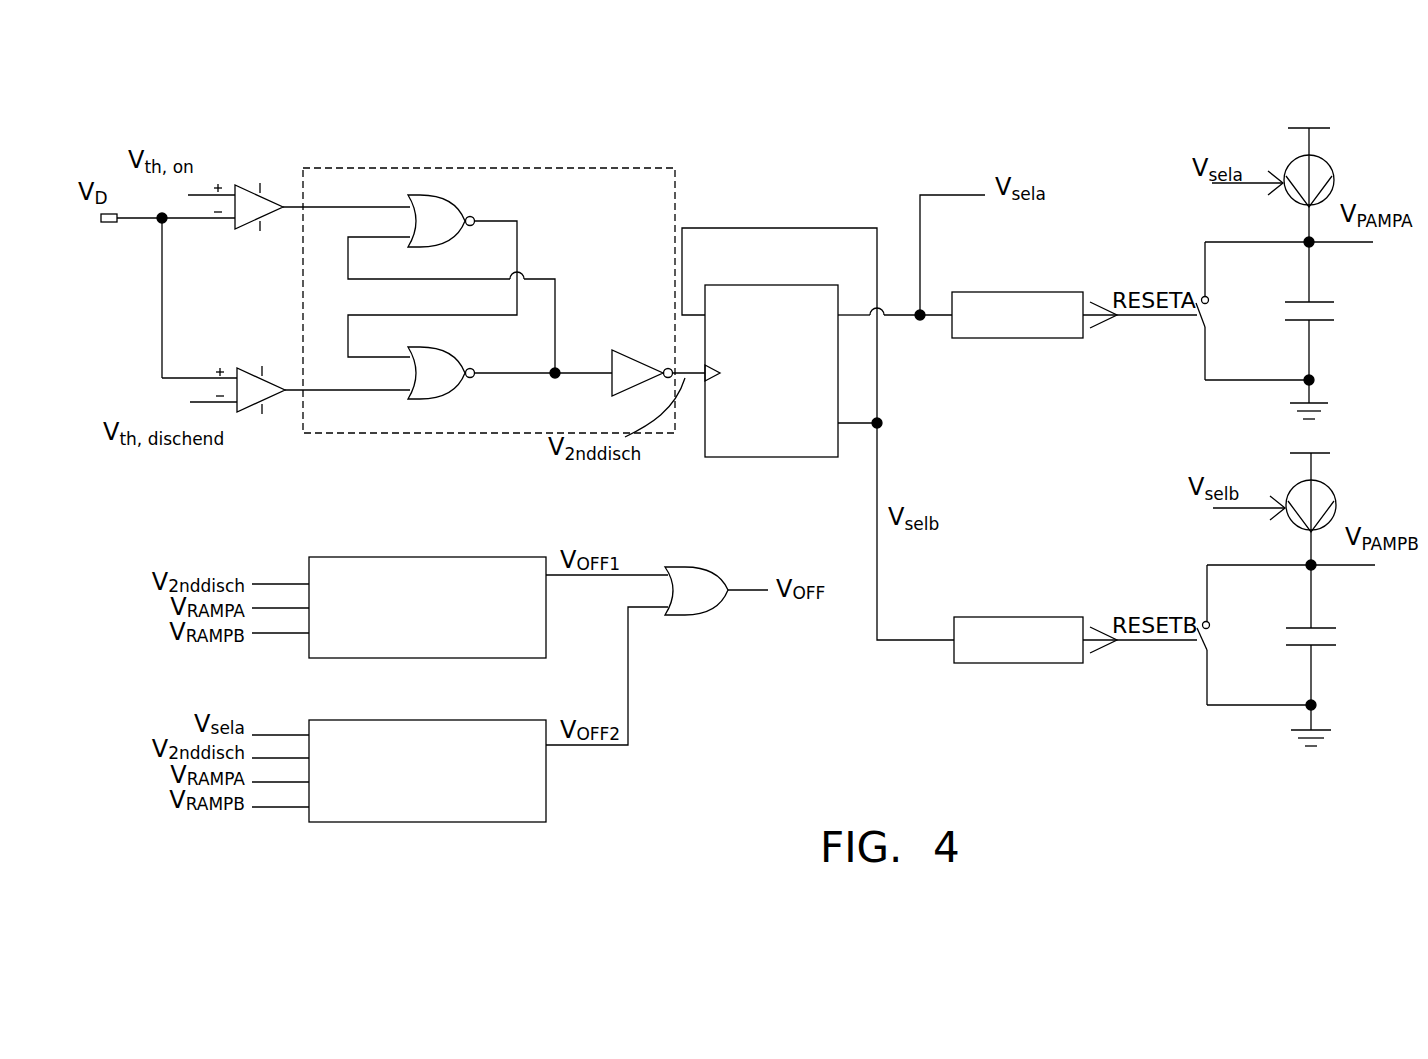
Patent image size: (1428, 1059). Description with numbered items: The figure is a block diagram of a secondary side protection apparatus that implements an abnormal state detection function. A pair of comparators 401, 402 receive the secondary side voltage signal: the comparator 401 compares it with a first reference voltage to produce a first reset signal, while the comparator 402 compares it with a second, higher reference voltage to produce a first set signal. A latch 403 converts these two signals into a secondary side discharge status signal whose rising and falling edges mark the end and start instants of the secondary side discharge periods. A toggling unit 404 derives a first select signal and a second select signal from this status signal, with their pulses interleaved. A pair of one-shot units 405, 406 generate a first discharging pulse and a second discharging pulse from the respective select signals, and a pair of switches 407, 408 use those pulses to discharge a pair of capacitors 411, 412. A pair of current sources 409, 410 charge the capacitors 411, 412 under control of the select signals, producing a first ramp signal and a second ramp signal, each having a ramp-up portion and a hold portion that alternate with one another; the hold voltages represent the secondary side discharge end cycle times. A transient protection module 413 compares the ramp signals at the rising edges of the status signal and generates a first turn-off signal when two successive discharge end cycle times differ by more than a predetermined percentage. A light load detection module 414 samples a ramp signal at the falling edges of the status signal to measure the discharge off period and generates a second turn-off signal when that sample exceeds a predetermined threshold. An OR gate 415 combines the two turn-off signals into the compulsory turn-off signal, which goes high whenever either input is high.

The comparator 401 is at (247, 187).
The comparator 402 is at (250, 400).
The latch 403 is at (552, 167).
The toggling unit 404 is at (770, 310).
The one-shot unit 405 is at (1070, 293).
The one-shot unit 406 is at (1040, 660).
The switch 407 is at (1197, 320).
The switch 408 is at (1213, 633).
The current source 409 is at (1318, 172).
The current source 410 is at (1325, 508).
The capacitor 411 is at (1342, 311).
The capacitor 412 is at (1287, 655).
The transient protection module 413 is at (353, 568).
The light load detection module 414 is at (477, 805).
The OR gate 415 is at (697, 580).